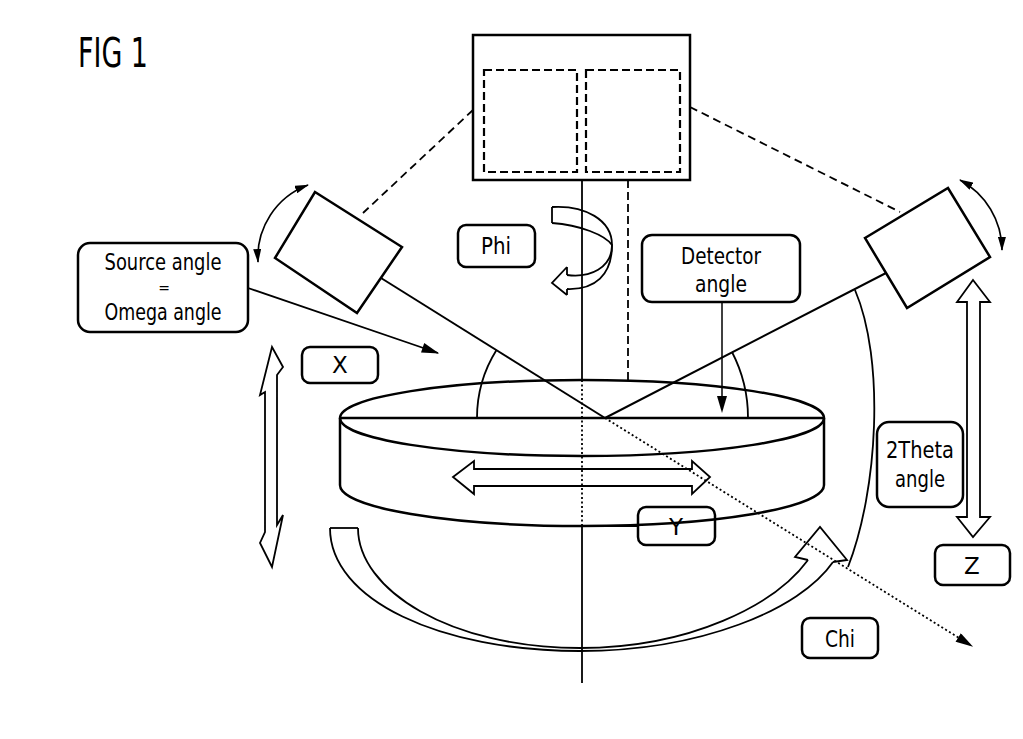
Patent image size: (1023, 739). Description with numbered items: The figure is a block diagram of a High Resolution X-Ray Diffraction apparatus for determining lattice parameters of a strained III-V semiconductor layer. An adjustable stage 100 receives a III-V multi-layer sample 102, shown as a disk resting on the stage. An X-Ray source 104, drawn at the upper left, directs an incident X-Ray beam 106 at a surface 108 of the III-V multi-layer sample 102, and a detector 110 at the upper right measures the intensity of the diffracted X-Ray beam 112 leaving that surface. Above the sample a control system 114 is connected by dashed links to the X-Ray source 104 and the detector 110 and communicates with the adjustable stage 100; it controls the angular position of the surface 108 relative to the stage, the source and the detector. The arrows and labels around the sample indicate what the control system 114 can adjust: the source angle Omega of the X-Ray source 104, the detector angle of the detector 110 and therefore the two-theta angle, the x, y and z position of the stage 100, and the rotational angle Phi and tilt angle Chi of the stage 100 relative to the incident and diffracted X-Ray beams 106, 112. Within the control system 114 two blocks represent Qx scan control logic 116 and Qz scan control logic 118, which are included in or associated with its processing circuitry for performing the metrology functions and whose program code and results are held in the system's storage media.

The adjustable stage 100 is at (340, 462).
The III-V multi-layer sample 102 is at (762, 398).
The X-Ray source 104 is at (336, 203).
The incident X-Ray beam 106 is at (428, 297).
The surface 108 is at (803, 405).
The detector 110 is at (926, 200).
The diffracted X-Ray beam 112 is at (837, 292).
The control system 114 is at (691, 63).
The Qx scan control logic 116 is at (484, 92).
The Qz scan control logic 118 is at (681, 95).